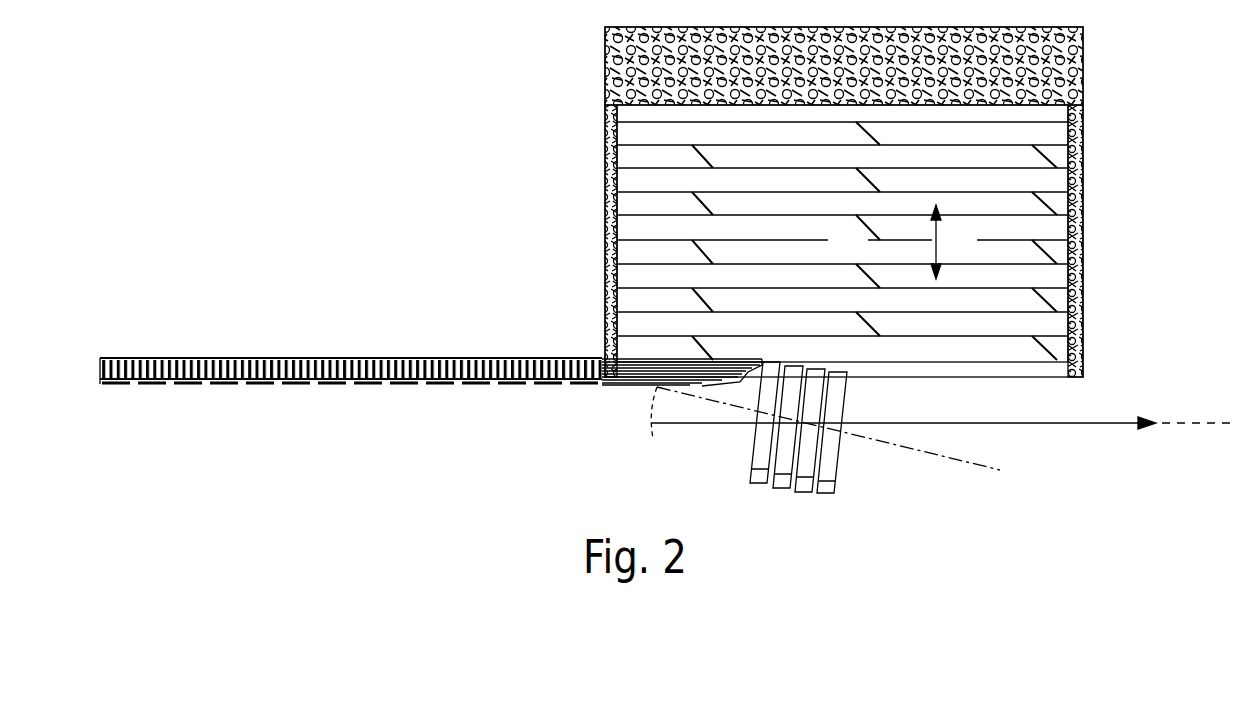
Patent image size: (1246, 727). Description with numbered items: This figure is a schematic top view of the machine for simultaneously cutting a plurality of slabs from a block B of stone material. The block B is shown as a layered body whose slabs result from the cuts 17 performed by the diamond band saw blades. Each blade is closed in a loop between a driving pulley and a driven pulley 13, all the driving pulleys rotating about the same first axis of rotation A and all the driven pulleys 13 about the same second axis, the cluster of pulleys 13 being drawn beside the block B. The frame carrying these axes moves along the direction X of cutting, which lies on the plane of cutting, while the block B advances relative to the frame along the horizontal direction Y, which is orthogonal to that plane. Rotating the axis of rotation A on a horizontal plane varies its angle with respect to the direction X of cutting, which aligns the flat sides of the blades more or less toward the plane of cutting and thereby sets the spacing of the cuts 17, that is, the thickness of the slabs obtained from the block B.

The driven pulley 13 is at (822, 480).
The cuts 17 is at (653, 337).
The block of stone material B is at (852, 252).
The direction of relative advancement Y is at (942, 242).
The direction of cutting X is at (907, 437).
The first axis of rotation A is at (825, 434).